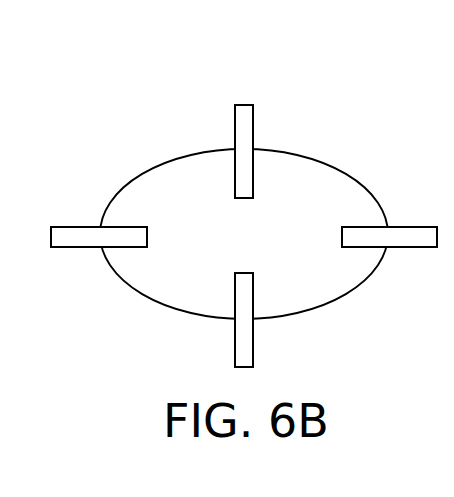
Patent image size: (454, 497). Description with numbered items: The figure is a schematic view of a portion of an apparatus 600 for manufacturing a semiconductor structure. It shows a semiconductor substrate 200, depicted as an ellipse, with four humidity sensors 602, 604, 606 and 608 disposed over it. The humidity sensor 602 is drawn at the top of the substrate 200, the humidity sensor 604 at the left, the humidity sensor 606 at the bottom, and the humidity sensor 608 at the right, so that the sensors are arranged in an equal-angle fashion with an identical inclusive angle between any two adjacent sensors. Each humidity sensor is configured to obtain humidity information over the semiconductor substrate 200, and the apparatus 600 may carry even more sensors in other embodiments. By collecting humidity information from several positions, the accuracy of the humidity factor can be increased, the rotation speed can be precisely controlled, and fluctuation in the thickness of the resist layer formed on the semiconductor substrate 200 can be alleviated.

The apparatus 600 is at (79, 56).
The semiconductor substrate 200 is at (175, 177).
The humidity sensor 602 is at (244, 118).
The humidity sensor 604 is at (68, 239).
The humidity sensor 606 is at (245, 347).
The humidity sensor 608 is at (413, 239).